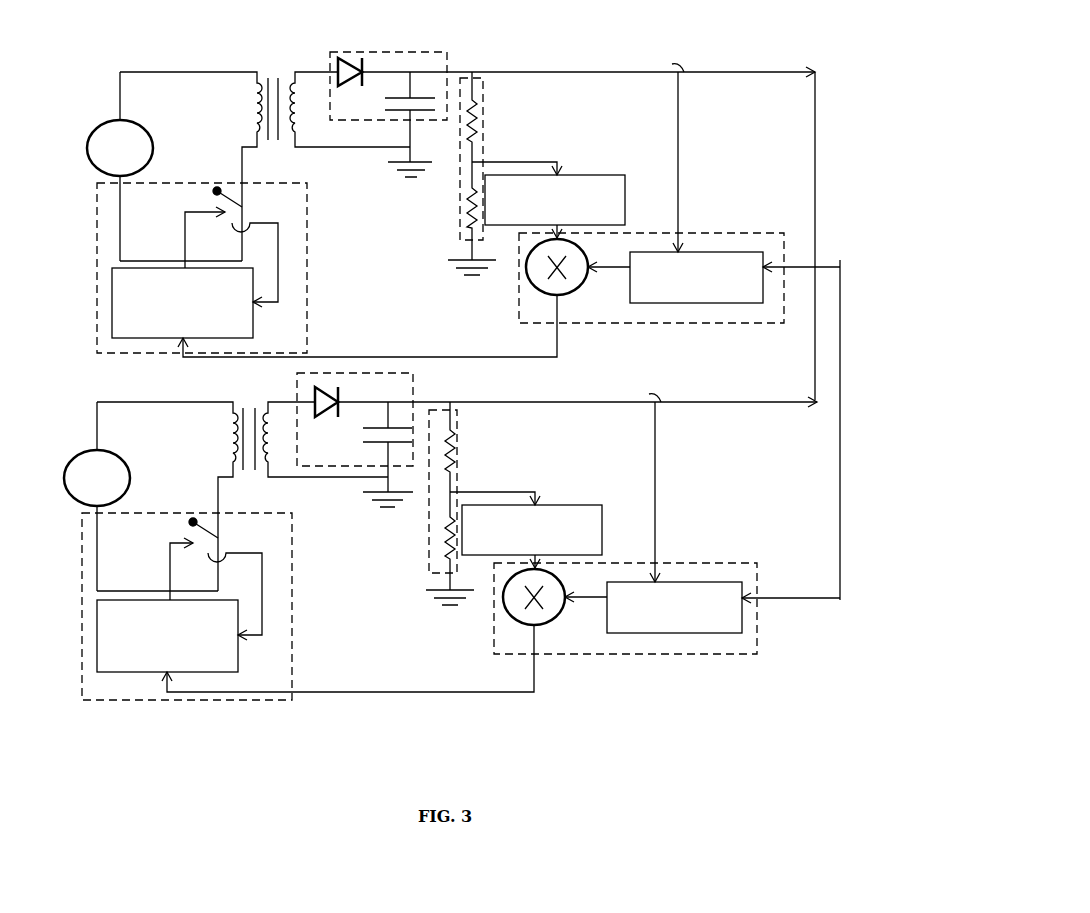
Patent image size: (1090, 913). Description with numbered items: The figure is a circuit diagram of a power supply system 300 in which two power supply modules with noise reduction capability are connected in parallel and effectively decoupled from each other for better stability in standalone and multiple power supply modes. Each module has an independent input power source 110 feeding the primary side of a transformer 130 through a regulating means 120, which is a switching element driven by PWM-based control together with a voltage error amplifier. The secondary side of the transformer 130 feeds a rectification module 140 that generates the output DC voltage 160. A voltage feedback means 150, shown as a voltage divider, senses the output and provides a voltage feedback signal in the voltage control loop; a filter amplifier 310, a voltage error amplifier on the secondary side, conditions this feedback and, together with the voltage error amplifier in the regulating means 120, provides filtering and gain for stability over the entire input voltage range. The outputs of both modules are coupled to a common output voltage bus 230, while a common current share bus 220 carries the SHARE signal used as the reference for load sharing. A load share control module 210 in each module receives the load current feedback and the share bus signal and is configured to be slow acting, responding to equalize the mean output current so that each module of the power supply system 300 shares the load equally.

The input power source 110 is at (82, 156).
The regulating means 120 is at (308, 215).
The transformer 130 is at (275, 70).
The rectification module 140 is at (453, 65).
The voltage feedback means 150 is at (483, 110).
The output DC voltage 160 is at (593, 63).
The load share control module 210 is at (765, 232).
The common current share bus 220 is at (843, 327).
The common output voltage bus 230 is at (820, 102).
The filter amplifier 310 is at (613, 168).
The power supply system 300 is at (375, 704).